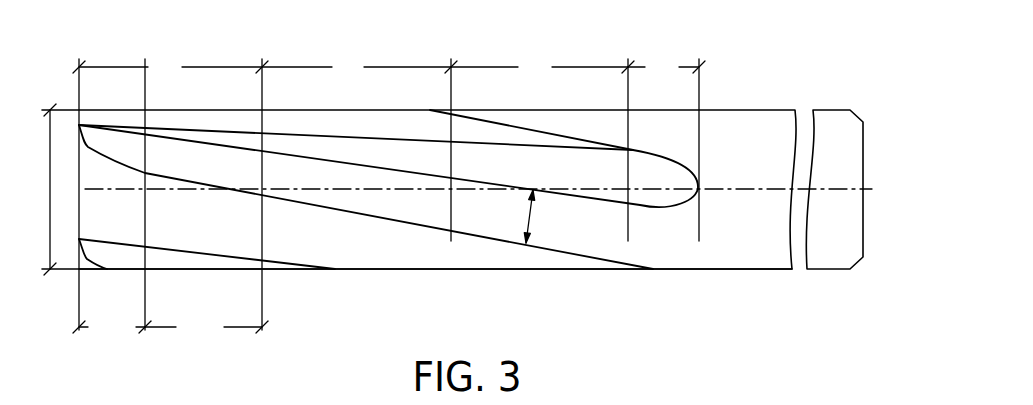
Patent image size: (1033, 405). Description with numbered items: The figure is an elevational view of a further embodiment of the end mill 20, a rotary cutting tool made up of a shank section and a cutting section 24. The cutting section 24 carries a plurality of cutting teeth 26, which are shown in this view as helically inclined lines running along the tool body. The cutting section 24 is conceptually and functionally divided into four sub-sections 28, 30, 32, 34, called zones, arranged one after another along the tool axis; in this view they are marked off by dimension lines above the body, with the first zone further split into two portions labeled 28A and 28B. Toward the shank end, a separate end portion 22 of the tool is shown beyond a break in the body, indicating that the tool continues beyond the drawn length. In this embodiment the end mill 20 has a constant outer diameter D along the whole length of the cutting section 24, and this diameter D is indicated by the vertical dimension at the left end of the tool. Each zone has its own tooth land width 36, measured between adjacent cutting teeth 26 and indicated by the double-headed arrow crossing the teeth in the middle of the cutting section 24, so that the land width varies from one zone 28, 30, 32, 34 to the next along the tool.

The end mill 20 is at (773, 58).
The shank end 22 is at (830, 269).
The cutting section 24 is at (397, 269).
The cutting teeth 26 is at (338, 212).
The sub-section 28 is at (151, 78).
The first sub-section of first flute section 28A is at (90, 338).
The second sub-section of first flute section 28B is at (178, 338).
The sub-section 30 is at (334, 78).
The sub-section 32 is at (521, 78).
The sub-section 34 is at (648, 78).
The tooth land width 36 is at (532, 225).
The outer diameter D is at (47, 189).